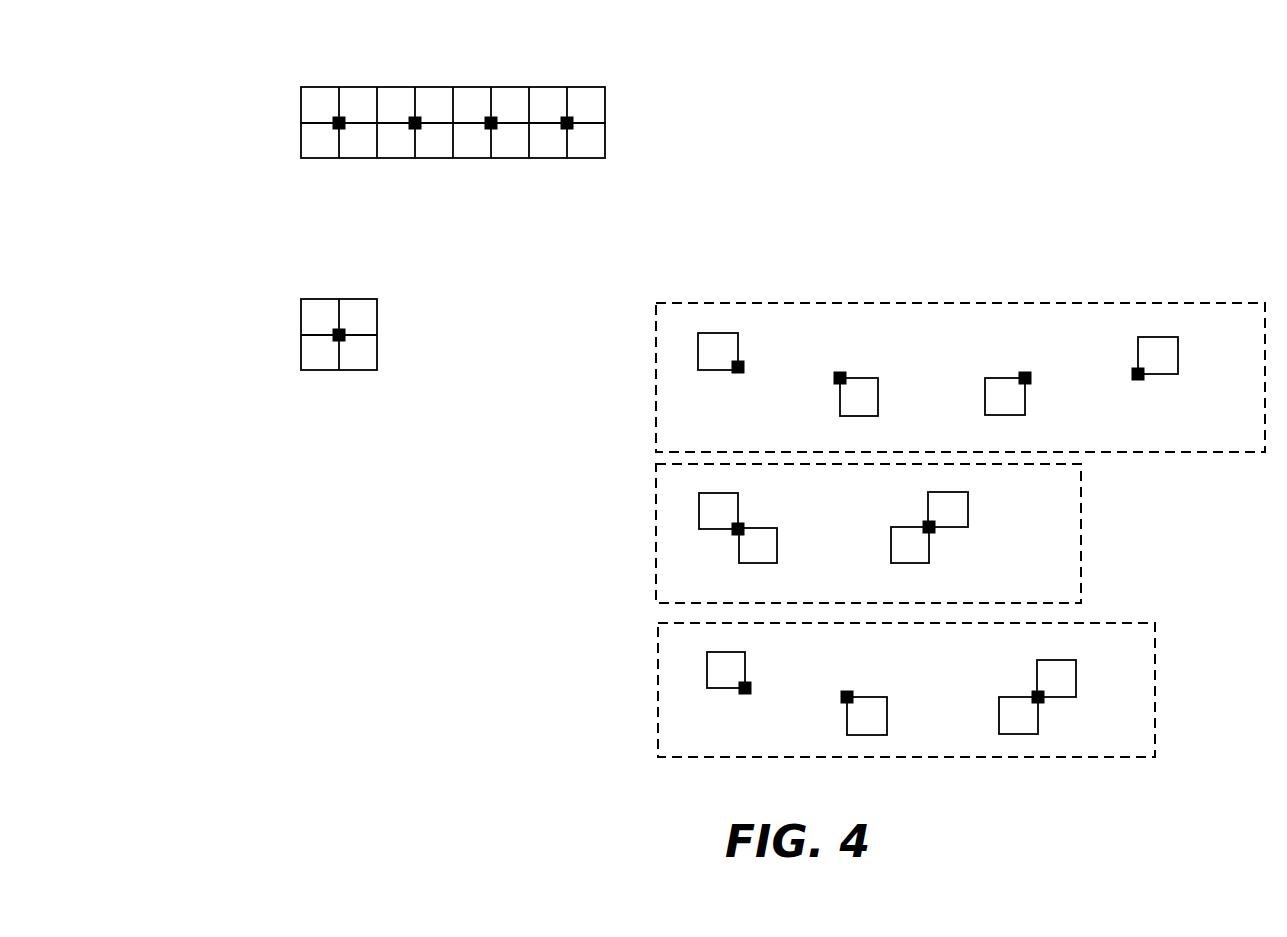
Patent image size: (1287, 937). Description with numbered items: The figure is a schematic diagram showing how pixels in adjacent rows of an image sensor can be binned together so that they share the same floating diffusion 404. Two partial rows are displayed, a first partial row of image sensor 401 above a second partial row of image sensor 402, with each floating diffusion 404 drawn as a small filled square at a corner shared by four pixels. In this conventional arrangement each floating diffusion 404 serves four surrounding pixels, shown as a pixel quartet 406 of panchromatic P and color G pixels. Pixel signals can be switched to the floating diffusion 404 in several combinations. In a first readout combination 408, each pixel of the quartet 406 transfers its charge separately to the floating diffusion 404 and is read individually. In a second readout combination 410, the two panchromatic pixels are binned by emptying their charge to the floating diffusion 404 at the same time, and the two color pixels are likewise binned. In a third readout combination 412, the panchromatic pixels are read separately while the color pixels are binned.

The first partial row of image sensor 401 is at (280, 100).
The second partial row of image sensor 402 is at (280, 147).
The floating diffusion 404 is at (337, 118).
The pixel quartet 406 is at (300, 335).
The first readout combination 408 is at (655, 380).
The second readout combination 410 is at (655, 556).
The third readout combination 412 is at (657, 698).